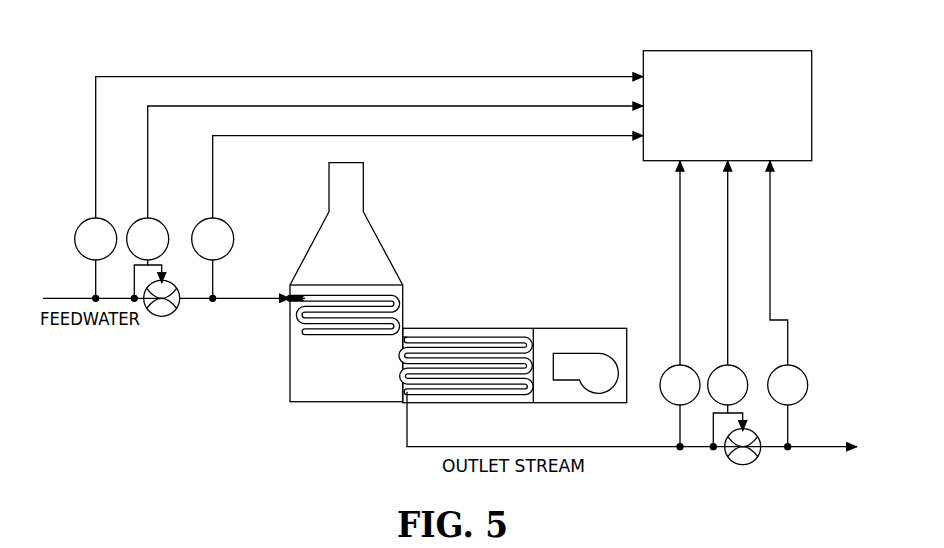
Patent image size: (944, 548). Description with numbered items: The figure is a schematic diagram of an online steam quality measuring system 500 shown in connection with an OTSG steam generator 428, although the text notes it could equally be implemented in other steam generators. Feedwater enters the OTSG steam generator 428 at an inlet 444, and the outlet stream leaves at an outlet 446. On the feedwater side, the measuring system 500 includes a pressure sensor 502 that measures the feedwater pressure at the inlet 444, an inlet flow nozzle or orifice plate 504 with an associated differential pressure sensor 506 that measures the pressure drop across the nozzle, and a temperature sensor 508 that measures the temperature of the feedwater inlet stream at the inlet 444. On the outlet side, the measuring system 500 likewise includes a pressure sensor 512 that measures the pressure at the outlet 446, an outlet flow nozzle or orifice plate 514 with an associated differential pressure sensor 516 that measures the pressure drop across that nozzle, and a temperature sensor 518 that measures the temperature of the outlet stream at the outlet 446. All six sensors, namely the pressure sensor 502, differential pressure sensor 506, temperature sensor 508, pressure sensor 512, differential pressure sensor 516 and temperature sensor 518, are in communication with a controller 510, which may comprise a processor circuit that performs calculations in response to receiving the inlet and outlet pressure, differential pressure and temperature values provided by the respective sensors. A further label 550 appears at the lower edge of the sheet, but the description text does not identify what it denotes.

The online steam quality measuring system 500 is at (627, 40).
The pressure sensor 502 is at (83, 223).
The inlet flow nozzle or orifice plate 504 is at (163, 313).
The differential pressure sensor 506 is at (161, 223).
The temperature sensor 508 is at (227, 225).
The controller 510 is at (742, 131).
The pressure sensor 512 is at (670, 368).
The outlet flow nozzle or orifice plate 514 is at (745, 463).
The differential pressure sensor 516 is at (736, 368).
The temperature sensor 518 is at (798, 368).
The OTSG steam generator 428 is at (466, 256).
The inlet 444 is at (290, 295).
The outlet 446 is at (403, 407).
The system 550 is at (138, 547).